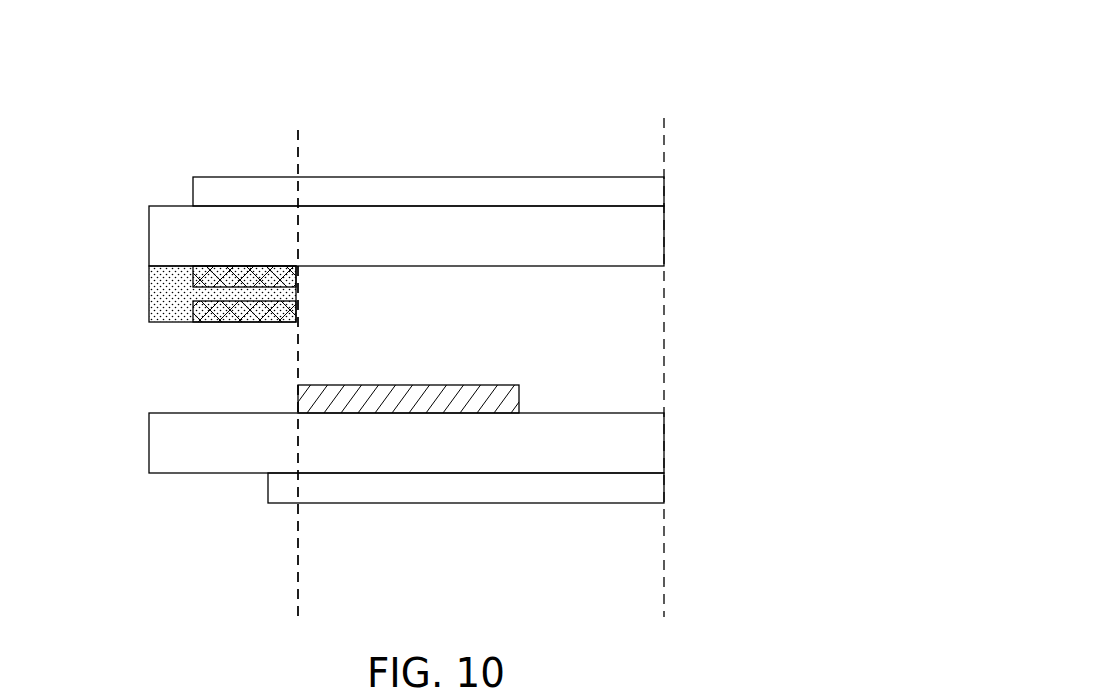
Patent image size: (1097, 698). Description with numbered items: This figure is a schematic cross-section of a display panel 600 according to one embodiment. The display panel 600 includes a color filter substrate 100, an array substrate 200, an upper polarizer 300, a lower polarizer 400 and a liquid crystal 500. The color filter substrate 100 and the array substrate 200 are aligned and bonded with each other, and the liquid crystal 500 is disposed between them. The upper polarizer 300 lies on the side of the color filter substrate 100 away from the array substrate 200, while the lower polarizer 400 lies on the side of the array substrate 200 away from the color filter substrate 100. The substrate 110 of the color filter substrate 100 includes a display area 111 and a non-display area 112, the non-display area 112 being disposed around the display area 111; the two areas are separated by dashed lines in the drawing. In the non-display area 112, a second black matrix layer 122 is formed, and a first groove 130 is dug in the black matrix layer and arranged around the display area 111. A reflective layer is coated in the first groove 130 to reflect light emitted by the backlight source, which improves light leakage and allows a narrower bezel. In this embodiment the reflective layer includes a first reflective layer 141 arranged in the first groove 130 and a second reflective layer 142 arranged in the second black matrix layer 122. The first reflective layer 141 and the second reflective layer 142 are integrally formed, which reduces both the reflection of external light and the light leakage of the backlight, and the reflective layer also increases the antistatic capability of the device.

The display panel 600 is at (743, 101).
The display area 111 is at (511, 138).
The non-display area 112 is at (250, 138).
The upper polarizer 300 is at (648, 182).
The color filter substrate 100 is at (406, 236).
The substrate 110 is at (647, 252).
The second black matrix layer 122 is at (241, 280).
The first groove 130 is at (181, 267).
The first reflective layer 141 is at (150, 298).
The second reflective layer 142 is at (228, 296).
The liquid crystal 500 is at (520, 402).
The array substrate 200 is at (647, 428).
The lower polarizer 400 is at (647, 490).